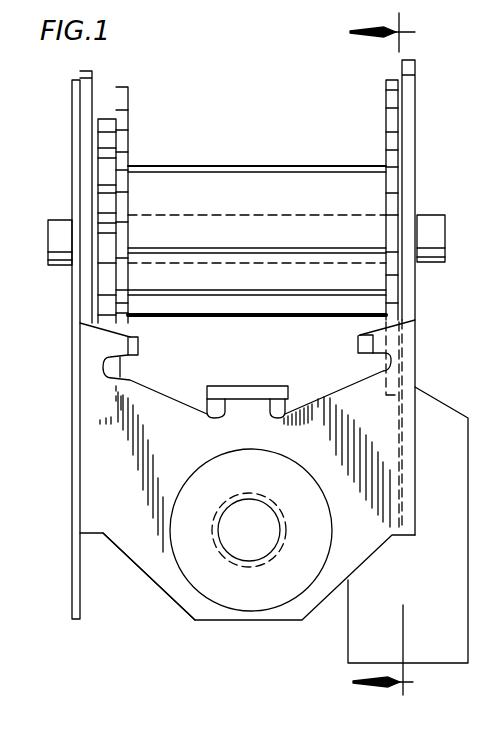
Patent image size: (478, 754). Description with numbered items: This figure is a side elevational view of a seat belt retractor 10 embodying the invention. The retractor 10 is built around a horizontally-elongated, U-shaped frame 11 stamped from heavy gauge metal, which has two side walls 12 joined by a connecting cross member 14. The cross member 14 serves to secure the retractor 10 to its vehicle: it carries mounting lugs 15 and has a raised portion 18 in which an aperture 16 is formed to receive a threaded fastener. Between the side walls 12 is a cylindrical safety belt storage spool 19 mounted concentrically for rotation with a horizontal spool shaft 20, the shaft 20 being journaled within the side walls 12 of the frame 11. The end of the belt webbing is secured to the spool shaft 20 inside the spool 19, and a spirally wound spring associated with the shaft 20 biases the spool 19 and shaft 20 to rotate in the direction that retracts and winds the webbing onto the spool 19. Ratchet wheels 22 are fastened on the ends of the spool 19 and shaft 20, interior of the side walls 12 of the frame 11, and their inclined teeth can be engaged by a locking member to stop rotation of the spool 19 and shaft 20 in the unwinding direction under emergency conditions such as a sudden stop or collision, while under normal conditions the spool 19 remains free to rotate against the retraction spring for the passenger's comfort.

The seat belt retractor 10 is at (424, 89).
The frame 11 is at (145, 588).
The side walls 12 is at (80, 158).
The connecting cross member 14 is at (98, 478).
The mounting lugs 15 is at (138, 343).
The aperture 16 is at (228, 508).
The raised portion 18 is at (323, 450).
The safety belt storage spool 19 is at (178, 192).
The spool shaft 20 is at (433, 222).
The ratchet wheels 22 is at (128, 88).